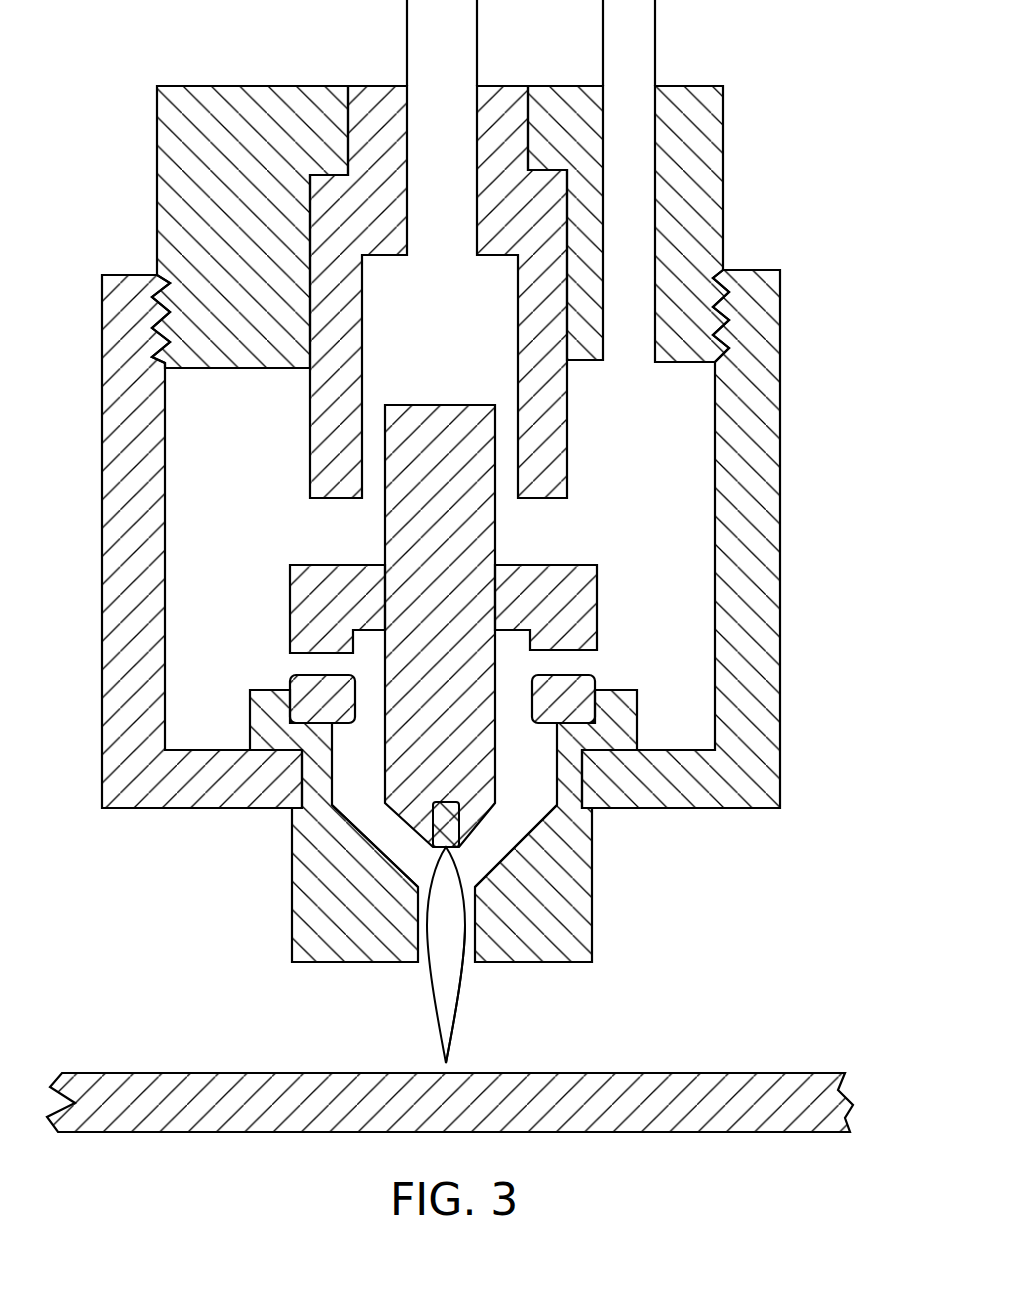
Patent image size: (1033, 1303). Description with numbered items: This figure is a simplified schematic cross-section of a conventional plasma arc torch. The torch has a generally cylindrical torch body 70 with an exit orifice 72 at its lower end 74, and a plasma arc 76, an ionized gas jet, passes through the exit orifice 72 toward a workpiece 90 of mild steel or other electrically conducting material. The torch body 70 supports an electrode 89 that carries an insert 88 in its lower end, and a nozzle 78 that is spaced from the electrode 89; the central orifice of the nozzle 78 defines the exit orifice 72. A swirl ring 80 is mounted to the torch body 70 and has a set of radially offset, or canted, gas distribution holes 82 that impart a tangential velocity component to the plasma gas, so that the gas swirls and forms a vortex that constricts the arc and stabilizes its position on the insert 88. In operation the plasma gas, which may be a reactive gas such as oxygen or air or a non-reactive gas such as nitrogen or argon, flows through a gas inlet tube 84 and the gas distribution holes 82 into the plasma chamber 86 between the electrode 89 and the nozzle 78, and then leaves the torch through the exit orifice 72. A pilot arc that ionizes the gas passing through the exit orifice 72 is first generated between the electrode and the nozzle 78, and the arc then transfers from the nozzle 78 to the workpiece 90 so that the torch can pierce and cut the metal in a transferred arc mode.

The torch body 70 is at (157, 165).
The exit orifice 72 is at (422, 963).
The lower end 74 is at (808, 906).
The plasma arc 76 is at (498, 1023).
The nozzle 78 is at (292, 858).
The swirl ring 80 is at (291, 563).
The gas distribution holes 82 is at (586, 660).
The gas inlet tube 84 is at (655, 22).
The plasma chamber 86 is at (432, 862).
The insert 88 is at (450, 829).
The electrode 89 is at (497, 525).
The workpiece 90 is at (844, 1089).